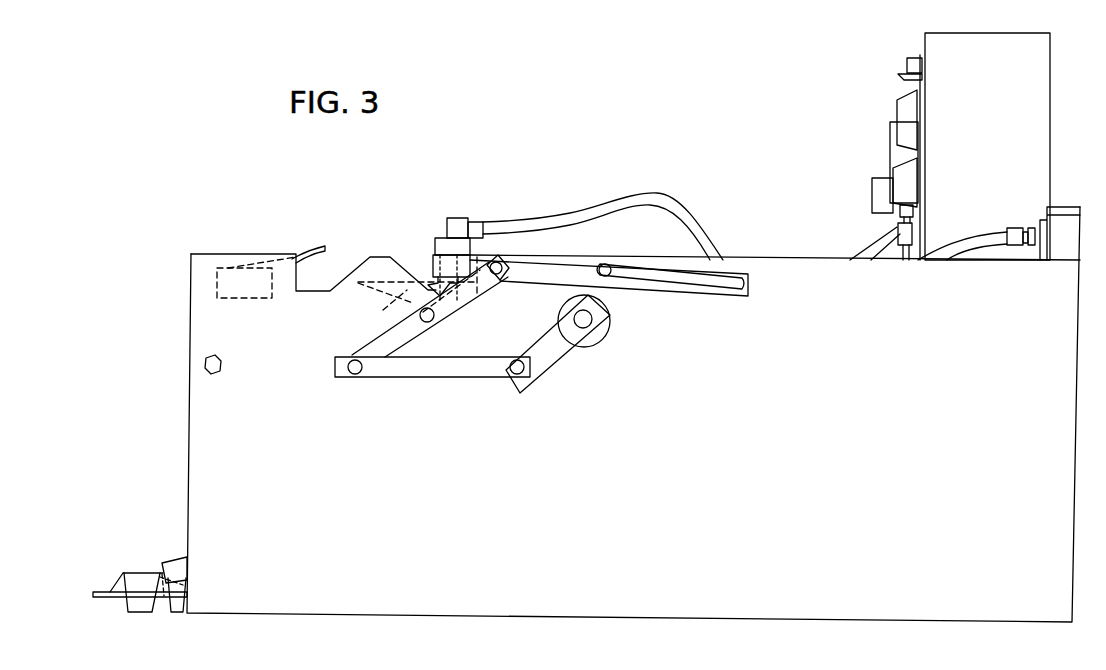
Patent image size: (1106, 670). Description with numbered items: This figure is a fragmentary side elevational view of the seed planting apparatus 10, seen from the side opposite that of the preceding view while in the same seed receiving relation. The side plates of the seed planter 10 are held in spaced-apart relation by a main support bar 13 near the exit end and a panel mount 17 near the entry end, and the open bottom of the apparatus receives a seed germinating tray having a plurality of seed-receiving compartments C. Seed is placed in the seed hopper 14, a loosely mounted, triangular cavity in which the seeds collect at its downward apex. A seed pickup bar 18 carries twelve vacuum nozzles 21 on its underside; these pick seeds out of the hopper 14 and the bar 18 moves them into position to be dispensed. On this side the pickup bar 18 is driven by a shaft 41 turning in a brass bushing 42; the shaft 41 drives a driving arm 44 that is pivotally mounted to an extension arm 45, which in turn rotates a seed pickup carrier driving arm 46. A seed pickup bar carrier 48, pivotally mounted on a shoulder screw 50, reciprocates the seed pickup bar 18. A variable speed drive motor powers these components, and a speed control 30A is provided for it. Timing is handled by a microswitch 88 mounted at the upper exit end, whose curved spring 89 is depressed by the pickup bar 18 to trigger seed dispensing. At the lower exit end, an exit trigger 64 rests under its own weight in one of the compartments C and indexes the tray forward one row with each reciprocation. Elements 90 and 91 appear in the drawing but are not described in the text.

The seed planting apparatus 10 is at (150, 255).
The main support bar 13 is at (208, 362).
The seed hopper 14 is at (383, 310).
The panel mount 17 is at (1062, 225).
The seed pickup bar 18 is at (437, 238).
The vacuum nozzles 21 is at (425, 273).
The speed control 30A is at (882, 190).
The shaft 41 is at (590, 328).
The brass bushing 42 is at (605, 302).
The driving arm 44 is at (550, 350).
The extension arm 45 is at (440, 372).
The seed pickup carrier driving arm 46 is at (392, 330).
The seed pickup bar carrier 48 is at (750, 291).
The shoulder screw 50 is at (502, 275).
The exit trigger 64 is at (175, 560).
The microswitch 88 is at (230, 268).
The curved spring 89 is at (308, 252).
The control box 90 is at (940, 86).
The hose 91 is at (592, 214).
The seed-receiving compartments C is at (135, 573).